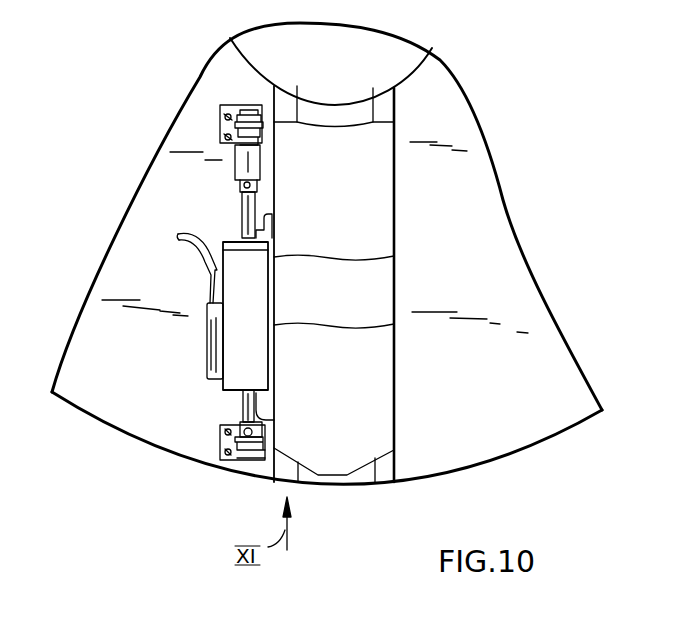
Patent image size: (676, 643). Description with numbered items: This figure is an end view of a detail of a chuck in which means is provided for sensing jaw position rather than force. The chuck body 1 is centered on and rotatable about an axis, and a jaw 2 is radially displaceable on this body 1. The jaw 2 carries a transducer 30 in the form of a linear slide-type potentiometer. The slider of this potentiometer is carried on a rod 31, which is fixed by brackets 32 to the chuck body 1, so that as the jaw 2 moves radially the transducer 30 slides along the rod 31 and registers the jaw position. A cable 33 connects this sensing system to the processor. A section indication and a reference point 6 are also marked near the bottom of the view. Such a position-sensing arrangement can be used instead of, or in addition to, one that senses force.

The chuck body 1 is at (473, 160).
The jaw 2 is at (378, 411).
The outlet point at bottom 6 is at (343, 483).
The transducer 30 is at (247, 357).
The rod 31 is at (248, 207).
The bracket 32 is at (225, 122).
The cable 33 is at (197, 248).